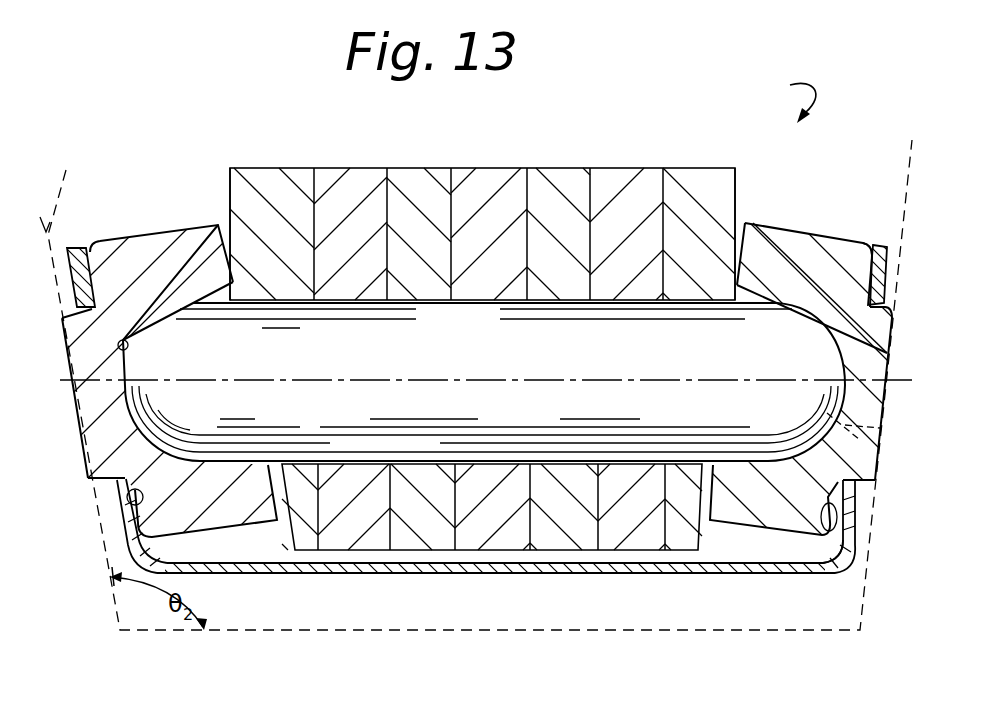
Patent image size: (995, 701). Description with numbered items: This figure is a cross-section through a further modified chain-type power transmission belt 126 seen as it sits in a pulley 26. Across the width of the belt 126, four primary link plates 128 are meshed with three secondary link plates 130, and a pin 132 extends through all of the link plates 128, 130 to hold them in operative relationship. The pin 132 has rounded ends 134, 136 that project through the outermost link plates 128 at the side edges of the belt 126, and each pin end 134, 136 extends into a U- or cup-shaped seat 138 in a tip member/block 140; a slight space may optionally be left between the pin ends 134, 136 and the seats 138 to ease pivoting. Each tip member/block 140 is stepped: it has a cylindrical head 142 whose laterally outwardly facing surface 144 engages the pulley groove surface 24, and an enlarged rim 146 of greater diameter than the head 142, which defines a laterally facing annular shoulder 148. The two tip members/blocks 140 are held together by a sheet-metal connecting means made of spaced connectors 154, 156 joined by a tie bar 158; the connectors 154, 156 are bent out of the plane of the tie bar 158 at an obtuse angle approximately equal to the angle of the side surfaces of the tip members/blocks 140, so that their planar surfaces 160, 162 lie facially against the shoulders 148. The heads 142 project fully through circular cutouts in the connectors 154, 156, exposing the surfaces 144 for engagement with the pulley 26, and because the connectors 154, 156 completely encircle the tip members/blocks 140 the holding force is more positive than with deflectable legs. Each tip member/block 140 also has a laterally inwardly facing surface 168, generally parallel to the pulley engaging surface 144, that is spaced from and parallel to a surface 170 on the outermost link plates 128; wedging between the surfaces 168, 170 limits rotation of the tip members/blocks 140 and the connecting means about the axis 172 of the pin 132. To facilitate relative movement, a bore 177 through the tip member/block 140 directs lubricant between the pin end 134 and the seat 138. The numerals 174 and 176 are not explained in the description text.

The pulley groove surface 24 is at (882, 569).
The pulley 26 is at (33, 430).
The chain-type power transmission belt 126 is at (777, 98).
The primary link plates 128 is at (264, 190).
The secondary link plates 130 is at (345, 190).
The pin 132 is at (732, 445).
The pin end 134 is at (847, 352).
The pin end 136 is at (130, 342).
The seat 138 is at (84, 482).
The tip member/block 140 is at (178, 265).
The cylindrical head 142 is at (836, 397).
The pulley engaging surface 144 is at (870, 353).
The enlarged rim 146 is at (793, 272).
The annular shoulder 148 is at (847, 250).
The connector 154 is at (72, 248).
The connector 156 is at (880, 247).
The tie bar 158 is at (428, 575).
The planar surface 160 is at (124, 504).
The planar surface 162 is at (825, 510).
The laterally inwardly facing surface 168 is at (235, 192).
The surface on outermost link plates 170 is at (270, 498).
The axis 172 is at (520, 374).
The foot 174 is at (116, 552).
The foot 176 is at (851, 506).
The bore 177 is at (848, 460).